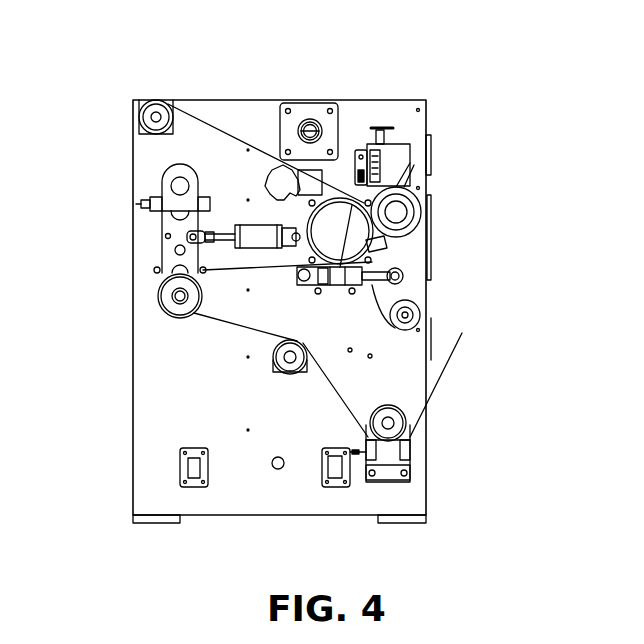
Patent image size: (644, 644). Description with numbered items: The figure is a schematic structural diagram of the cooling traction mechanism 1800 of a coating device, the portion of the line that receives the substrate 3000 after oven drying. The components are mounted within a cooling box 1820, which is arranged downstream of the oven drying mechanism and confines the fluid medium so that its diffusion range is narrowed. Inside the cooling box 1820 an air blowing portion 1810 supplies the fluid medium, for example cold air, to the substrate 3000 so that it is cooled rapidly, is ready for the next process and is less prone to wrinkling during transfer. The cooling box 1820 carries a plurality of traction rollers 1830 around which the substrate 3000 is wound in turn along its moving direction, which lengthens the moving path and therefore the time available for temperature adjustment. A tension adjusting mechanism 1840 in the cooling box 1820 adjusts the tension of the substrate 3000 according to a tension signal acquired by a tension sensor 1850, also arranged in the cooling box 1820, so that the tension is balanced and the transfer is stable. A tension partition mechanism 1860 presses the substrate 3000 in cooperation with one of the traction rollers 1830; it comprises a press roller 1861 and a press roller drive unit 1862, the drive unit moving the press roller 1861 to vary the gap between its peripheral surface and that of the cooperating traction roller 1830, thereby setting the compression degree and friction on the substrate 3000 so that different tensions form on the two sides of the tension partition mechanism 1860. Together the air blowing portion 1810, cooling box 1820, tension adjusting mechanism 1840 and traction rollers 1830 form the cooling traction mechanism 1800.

The cooling traction mechanism 1800 is at (316, 28).
The air blowing portion 1810 is at (280, 178).
The cooling box 1820 is at (133, 192).
The traction rollers 1830 is at (284, 370).
The tension adjusting mechanism 1840 is at (176, 254).
The tension sensor 1850 is at (340, 458).
The tension partition mechanism 1860 is at (480, 182).
The press roller 1861 is at (403, 216).
The press roller drive unit 1862 is at (392, 170).
The substrate 3000 is at (340, 393).